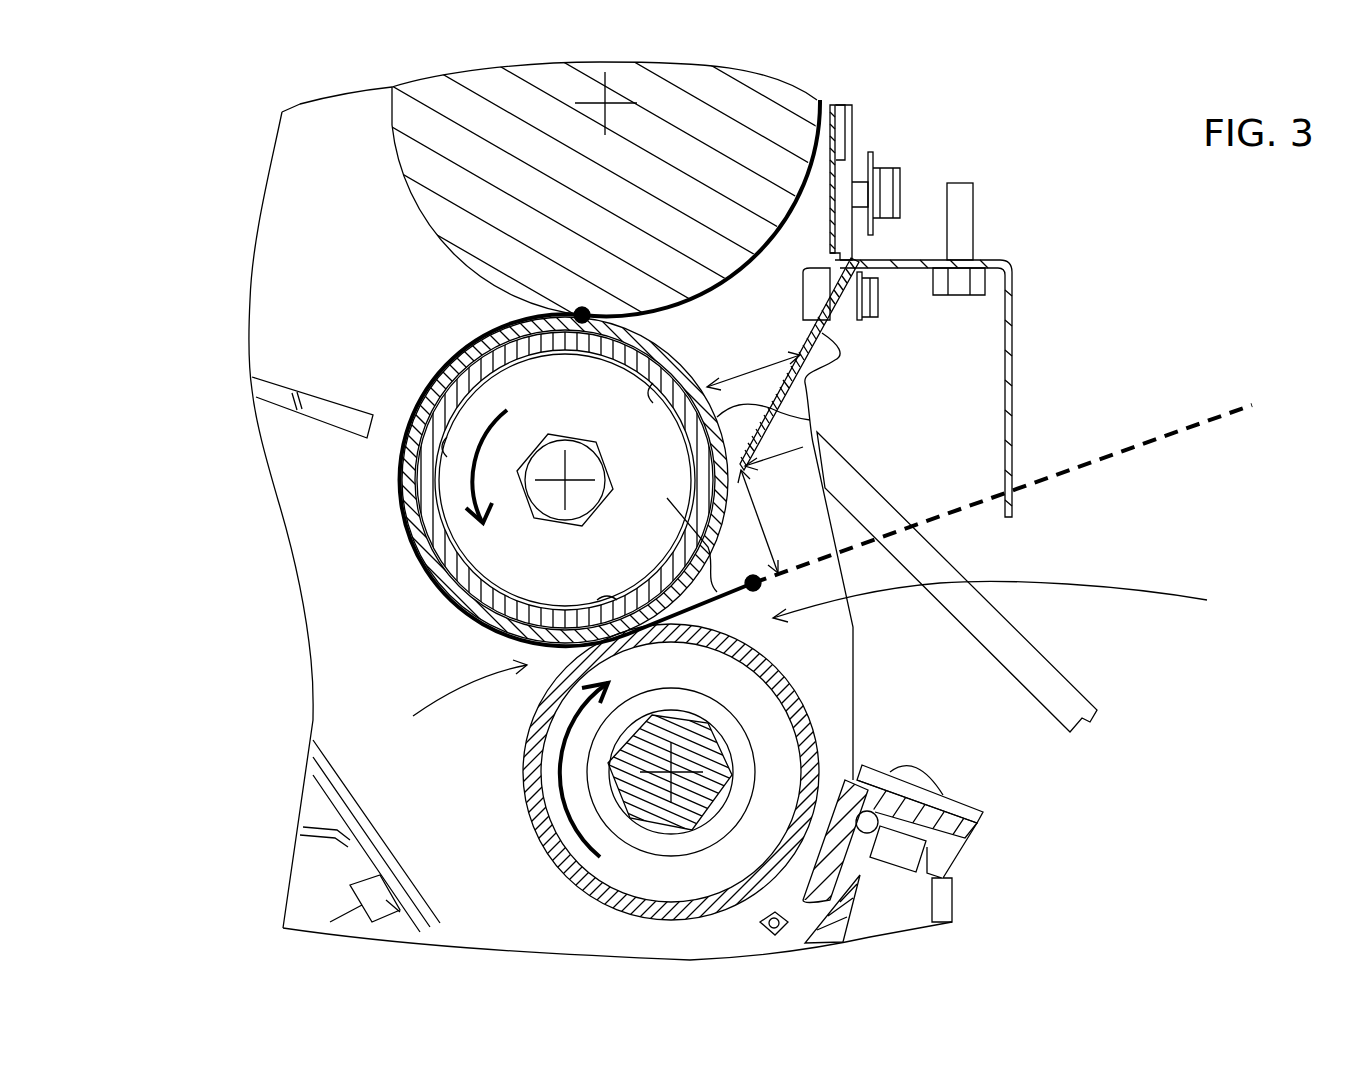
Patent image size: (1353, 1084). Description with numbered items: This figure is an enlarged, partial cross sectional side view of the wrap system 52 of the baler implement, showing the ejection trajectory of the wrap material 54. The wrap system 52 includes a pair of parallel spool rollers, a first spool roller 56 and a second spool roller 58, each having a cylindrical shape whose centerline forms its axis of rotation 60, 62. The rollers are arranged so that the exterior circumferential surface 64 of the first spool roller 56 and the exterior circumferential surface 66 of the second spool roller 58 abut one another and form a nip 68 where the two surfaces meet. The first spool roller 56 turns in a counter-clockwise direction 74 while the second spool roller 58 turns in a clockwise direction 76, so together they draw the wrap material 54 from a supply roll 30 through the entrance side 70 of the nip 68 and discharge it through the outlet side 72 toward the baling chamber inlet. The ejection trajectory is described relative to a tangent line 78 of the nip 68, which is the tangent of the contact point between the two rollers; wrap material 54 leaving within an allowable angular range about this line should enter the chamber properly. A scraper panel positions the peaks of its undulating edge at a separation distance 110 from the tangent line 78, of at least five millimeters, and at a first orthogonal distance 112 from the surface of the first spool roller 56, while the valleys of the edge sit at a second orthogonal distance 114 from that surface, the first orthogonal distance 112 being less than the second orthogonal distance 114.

The supply roll 30 is at (737, 107).
The wrap system 52 is at (213, 234).
The wrap material 54 is at (405, 488).
The first spool roller 56 is at (668, 343).
The second spool roller 58 is at (790, 673).
The axis of rotation 60 is at (538, 455).
The axis of rotation 62 is at (676, 742).
The exterior circumferential surface 64 is at (812, 422).
The exterior circumferential surface 66 is at (560, 878).
The nip 68 is at (650, 600).
The entrance side 70 is at (452, 699).
The outlet side 72 is at (1009, 601).
The counter-clockwise direction 74 is at (440, 372).
The clockwise direction 76 is at (525, 796).
The tangent line 78 is at (1178, 432).
The separation distance 110 is at (757, 510).
The first orthogonal distance 112 is at (783, 457).
The second orthogonal distance 114 is at (778, 345).